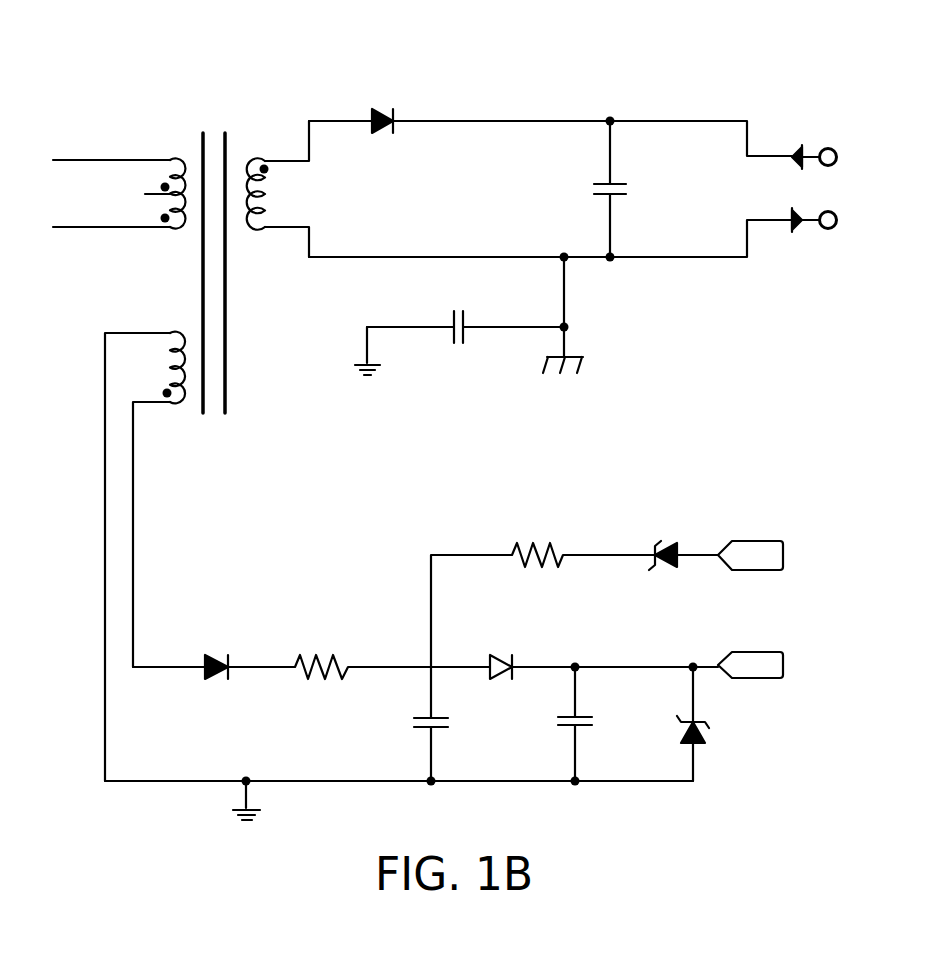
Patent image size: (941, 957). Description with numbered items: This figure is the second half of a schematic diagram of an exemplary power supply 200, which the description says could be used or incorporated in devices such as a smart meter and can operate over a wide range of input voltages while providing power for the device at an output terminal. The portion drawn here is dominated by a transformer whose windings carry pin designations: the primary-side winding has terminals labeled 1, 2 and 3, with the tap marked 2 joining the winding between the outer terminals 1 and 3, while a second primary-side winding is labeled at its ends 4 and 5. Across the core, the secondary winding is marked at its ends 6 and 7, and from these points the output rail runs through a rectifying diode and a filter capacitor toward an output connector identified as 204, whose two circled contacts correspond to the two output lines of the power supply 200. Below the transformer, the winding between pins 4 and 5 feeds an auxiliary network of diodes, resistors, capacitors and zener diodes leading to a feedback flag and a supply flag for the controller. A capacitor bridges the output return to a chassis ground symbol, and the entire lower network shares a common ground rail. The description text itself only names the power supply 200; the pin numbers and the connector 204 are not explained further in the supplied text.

The power supply 200 is at (487, 426).
The output connector 204 is at (830, 189).
The transformer TX1 pin 1 is at (111, 144).
The transformer TX1 pin 2 is at (145, 188).
The transformer TX1 pin 3 is at (111, 235).
The transformer TX1 pin 4 is at (137, 544).
The transformer TX1 pin 5 is at (148, 521).
The transformer TX1 pin 6 is at (285, 147).
The transformer TX1 pin 7 is at (287, 242).